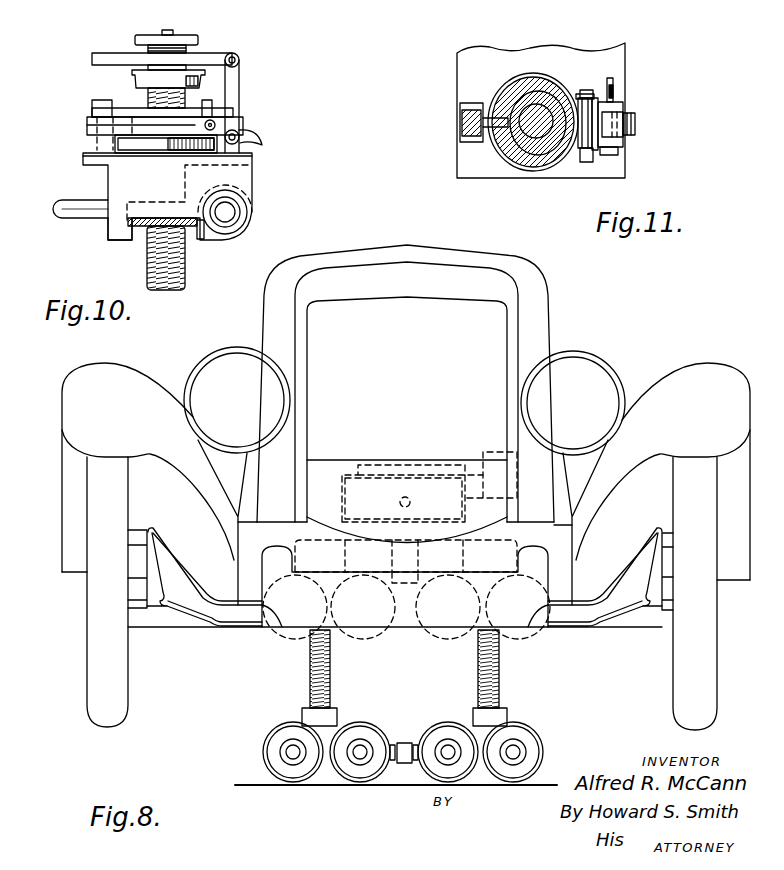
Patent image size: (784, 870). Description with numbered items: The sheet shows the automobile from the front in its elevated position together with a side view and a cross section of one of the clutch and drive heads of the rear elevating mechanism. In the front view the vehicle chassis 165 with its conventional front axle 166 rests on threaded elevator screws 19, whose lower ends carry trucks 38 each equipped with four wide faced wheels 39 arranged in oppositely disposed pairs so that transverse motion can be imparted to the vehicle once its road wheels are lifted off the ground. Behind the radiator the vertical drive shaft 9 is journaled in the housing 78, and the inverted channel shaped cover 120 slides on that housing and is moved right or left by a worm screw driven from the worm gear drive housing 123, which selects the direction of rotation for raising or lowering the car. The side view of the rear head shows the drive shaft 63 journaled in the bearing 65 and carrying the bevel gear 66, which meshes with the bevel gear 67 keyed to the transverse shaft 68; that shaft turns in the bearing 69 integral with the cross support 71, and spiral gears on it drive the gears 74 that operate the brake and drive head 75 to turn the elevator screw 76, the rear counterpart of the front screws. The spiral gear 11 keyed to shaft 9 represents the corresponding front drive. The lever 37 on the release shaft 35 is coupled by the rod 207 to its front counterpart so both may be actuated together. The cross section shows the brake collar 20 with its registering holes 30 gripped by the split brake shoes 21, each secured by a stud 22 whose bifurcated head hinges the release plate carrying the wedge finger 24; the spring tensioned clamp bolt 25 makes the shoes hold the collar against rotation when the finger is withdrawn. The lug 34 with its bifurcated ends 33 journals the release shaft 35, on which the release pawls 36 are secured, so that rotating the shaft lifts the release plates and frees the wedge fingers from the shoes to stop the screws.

In FIG. 10, the rod 207 is at (104, 53).
In FIG. 10, the lever 37 is at (243, 80).
In FIG. 10, the spiral gear 11 is at (116, 124).
In FIG. 10, the brake and drive head 75 is at (128, 144).
In FIG. 10, the cross support 71 is at (242, 172).
In FIG. 11, the cross support 71 is at (537, 48).
In FIG. 10, the drive shaft 63 is at (68, 200).
In FIG. 10, the transverse shaft 68 is at (226, 211).
In FIG. 10, the bevel gear 67 is at (250, 217).
In FIG. 10, the bearing 69 is at (237, 228).
In FIG. 10, the bearing 65 is at (110, 237).
In FIG. 10, the gear 74 is at (133, 225).
In FIG. 10, the elevator screw 76 is at (186, 280).
In FIG. 11, the elevator screw 76 is at (525, 90).
In FIG. 10, the bevel gear 66 is at (201, 230).
In FIG. 11, the split brake shoe 21 is at (545, 80).
In FIG. 11, the brake collar 20 is at (586, 92).
In FIG. 11, the spring tensioned clamp bolt 25 is at (590, 93).
In FIG. 11, the release shaft 35 is at (614, 86).
In FIG. 11, the bifurcated end 33 is at (626, 103).
In FIG. 11, the release pawl 36 is at (636, 123).
In FIG. 11, the lug 34 is at (607, 150).
In FIG. 11, the registering hole 30 is at (503, 148).
In FIG. 11, the wedge finger 24 is at (572, 170).
In FIG. 11, the stud 22 is at (460, 112).
In FIG. 8, the inverted channel shaped cover 120 is at (368, 462).
In FIG. 8, the housing 78 is at (383, 492).
In FIG. 8, the worm gear drive housing 123 is at (488, 450).
In FIG. 8, the vertical drive shaft 9 is at (420, 523).
In FIG. 8, the vehicle chassis 165 is at (565, 583).
In FIG. 8, the front axle 166 is at (592, 640).
In FIG. 8, the threaded elevator screw 19 is at (333, 690).
In FIG. 8, the truck 38 is at (327, 737).
In FIG. 8, the wide faced wheel 39 is at (378, 733).